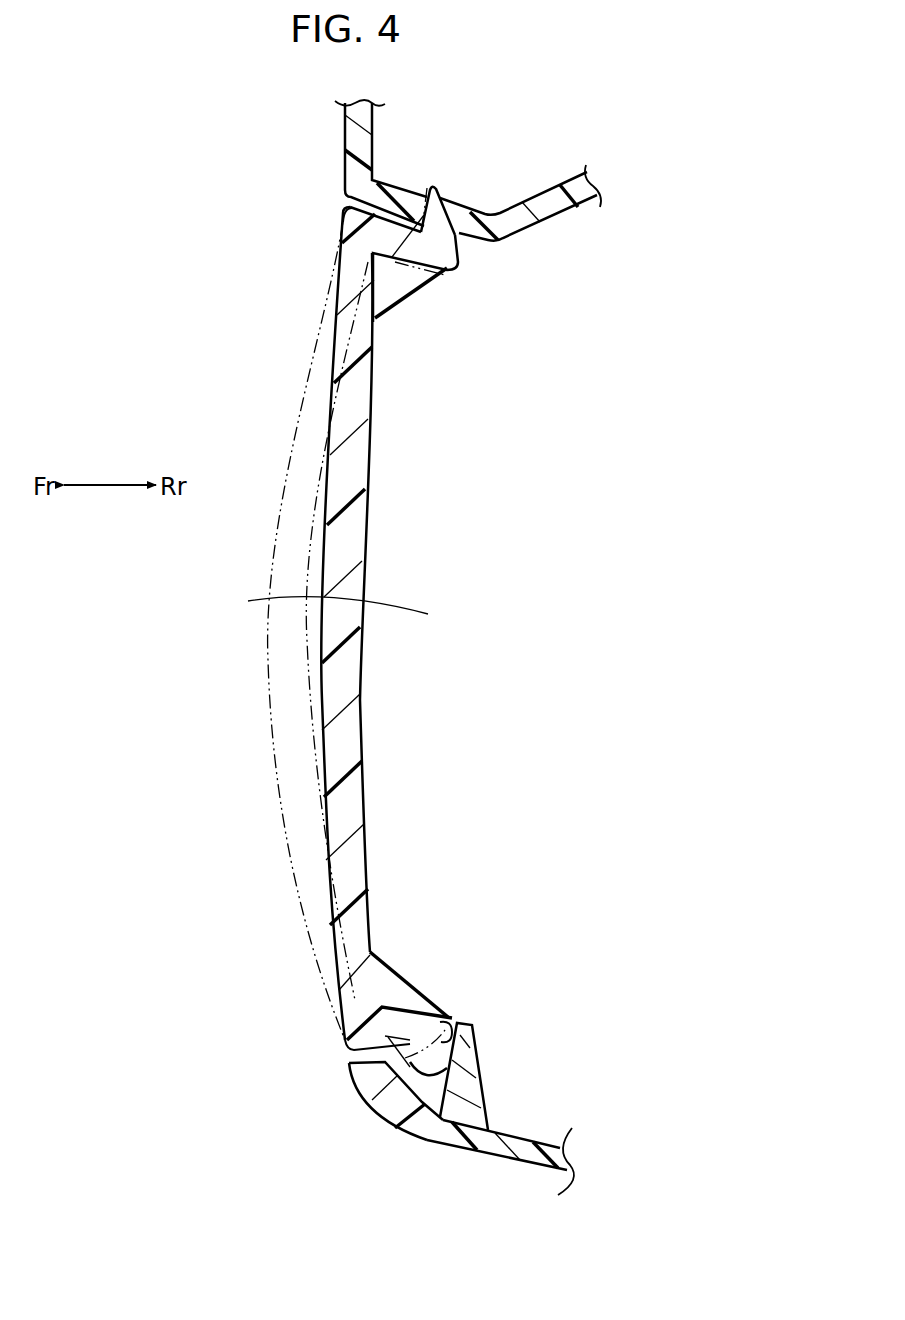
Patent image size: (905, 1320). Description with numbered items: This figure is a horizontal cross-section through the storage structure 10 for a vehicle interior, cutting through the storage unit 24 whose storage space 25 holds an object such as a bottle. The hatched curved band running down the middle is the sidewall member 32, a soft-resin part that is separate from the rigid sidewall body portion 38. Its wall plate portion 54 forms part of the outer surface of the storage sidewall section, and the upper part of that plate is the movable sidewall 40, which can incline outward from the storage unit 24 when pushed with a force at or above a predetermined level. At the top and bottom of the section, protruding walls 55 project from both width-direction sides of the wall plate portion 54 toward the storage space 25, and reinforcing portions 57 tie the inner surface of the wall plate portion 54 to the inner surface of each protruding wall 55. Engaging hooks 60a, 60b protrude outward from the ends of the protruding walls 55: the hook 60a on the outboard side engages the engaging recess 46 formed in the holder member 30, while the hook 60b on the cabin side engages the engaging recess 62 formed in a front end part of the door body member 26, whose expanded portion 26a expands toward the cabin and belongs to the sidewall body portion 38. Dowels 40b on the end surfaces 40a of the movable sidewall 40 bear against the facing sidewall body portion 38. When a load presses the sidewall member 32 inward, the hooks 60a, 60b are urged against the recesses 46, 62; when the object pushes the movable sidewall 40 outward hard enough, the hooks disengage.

The storage structure 10 is at (262, 184).
The storage unit 24 is at (470, 401).
The storage space 25 is at (321, 602).
The door body member 26 is at (450, 1153).
The expanded portion 26a is at (502, 1160).
The holder member 30 is at (343, 146).
The sidewall member 32 is at (328, 333).
The sidewall body portion 38 is at (397, 1133).
The movable sidewall 40 is at (350, 412).
The end surfaces 40a is at (378, 220).
The dowels 40b is at (397, 220).
The engaging recess 46 is at (445, 208).
The wall plate portion 54 is at (270, 690).
The protruding walls 55 is at (425, 272).
The reinforcing portions 57 is at (397, 282).
The engaging hook 60a is at (431, 188).
The engaging hook 60b is at (428, 1053).
The engaging recess 62 is at (443, 1037).